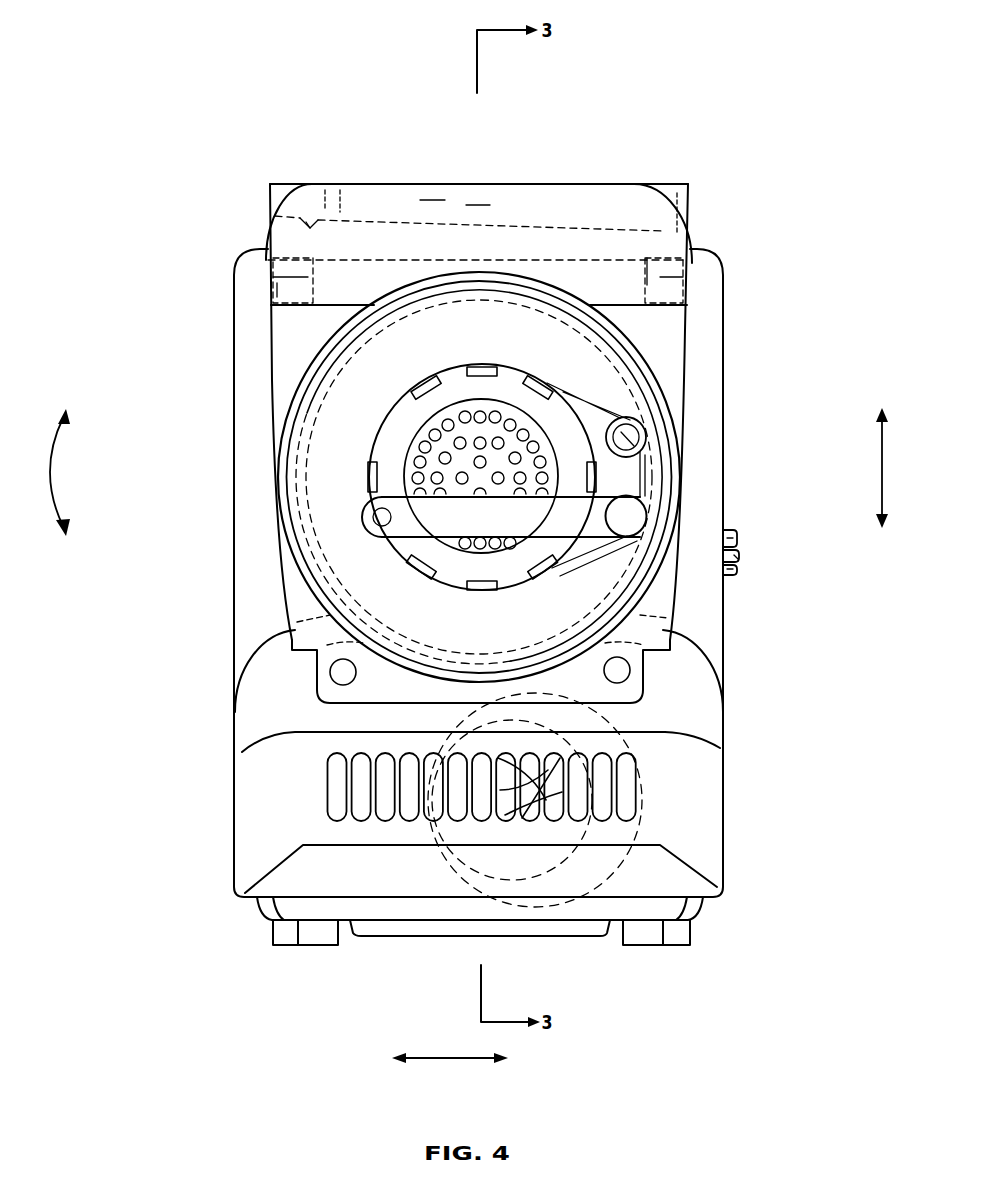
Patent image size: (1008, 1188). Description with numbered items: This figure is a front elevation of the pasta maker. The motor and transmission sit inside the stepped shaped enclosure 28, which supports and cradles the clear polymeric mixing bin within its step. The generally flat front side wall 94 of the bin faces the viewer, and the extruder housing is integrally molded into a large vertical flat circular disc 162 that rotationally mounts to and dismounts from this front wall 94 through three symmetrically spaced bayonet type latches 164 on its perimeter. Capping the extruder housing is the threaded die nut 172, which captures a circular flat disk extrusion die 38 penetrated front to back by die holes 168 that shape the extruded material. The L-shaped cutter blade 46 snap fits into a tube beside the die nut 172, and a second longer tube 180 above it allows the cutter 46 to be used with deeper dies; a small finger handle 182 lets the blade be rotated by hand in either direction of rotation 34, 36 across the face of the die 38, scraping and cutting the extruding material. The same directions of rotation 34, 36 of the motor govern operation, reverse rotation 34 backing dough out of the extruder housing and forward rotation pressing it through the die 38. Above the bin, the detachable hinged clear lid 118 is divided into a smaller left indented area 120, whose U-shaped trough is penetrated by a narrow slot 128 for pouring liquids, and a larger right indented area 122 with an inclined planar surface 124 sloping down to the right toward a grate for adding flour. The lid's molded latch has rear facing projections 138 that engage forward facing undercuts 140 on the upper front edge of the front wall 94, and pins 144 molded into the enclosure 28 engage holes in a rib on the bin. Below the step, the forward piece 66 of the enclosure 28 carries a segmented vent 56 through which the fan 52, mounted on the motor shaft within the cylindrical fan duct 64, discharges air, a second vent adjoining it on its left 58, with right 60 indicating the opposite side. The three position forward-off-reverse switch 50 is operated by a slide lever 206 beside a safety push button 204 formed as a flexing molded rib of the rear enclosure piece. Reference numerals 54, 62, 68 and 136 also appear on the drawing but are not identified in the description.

The stepped shaped enclosure 28 is at (695, 771).
The reverse direction of rotation 34 is at (59, 538).
The forward direction of rotation 36 is at (59, 459).
The extrusion die 38 is at (410, 452).
The cutter blade 46 is at (427, 553).
The forward-off-reverse switch 50 is at (740, 552).
The fan 52 is at (448, 860).
The motor 54 is at (433, 893).
The segmented vent 56 is at (523, 863).
The left direction 58 is at (435, 1058).
The right direction 60 is at (513, 1058).
The vertical direction 62 is at (881, 454).
The cylindrical fan duct 64 is at (881, 531).
The forward piece of the enclosure 66 is at (357, 803).
The lower housing 68 is at (690, 798).
The front side wall 94 is at (670, 373).
The lid 118 is at (640, 184).
The left indented area 120 is at (326, 205).
The right indented area 122 is at (477, 204).
The inclined planar surface 124 is at (655, 420).
The narrow slot 128 is at (309, 226).
The hinge pin 136 is at (433, 200).
The latch projections 138 is at (297, 293).
The undercuts 140 is at (266, 274).
The pins 144 is at (497, 650).
The flat circular disc 162 is at (555, 362).
The bayonet type latches 164 is at (316, 403).
The die holes 168 is at (290, 440).
The die nut 172 is at (372, 516).
The second longer tube 180 is at (648, 440).
The finger handle 182 is at (370, 462).
The safety push button 204 is at (738, 532).
The slide lever 206 is at (738, 558).